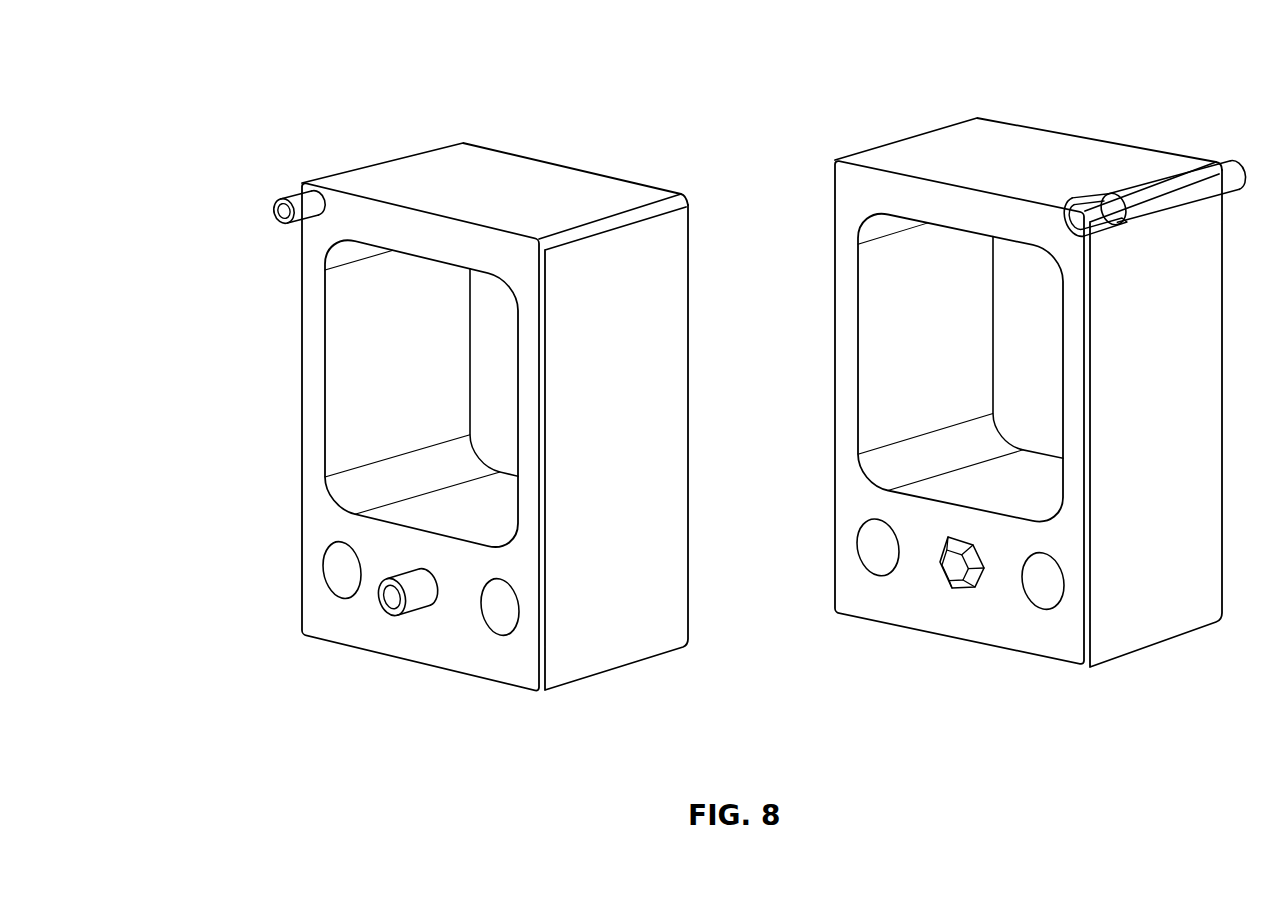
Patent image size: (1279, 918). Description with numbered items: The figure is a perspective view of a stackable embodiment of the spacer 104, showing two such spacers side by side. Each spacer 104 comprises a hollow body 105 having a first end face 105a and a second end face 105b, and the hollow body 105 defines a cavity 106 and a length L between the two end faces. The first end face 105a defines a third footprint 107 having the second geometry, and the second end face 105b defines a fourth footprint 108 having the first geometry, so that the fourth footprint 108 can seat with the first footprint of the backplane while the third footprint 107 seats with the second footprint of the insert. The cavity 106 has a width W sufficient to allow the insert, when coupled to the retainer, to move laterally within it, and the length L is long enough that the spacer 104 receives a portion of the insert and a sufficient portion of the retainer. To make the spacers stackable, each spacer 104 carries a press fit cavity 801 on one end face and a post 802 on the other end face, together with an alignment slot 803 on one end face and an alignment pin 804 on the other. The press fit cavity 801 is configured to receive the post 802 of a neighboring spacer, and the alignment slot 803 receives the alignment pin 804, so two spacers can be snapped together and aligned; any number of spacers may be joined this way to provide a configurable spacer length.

The spacer 104 is at (483, 84).
The hollow body 105 is at (530, 178).
The first end face 105a is at (664, 419).
The third footprint 107 is at (688, 250).
The second end face 105b is at (330, 436).
The fourth footprint 108 is at (317, 513).
The cavity 106 is at (352, 400).
The press fit cavity 801 is at (957, 569).
The post 802 is at (390, 603).
The alignment slot 803 is at (1097, 226).
The alignment pin 804 is at (283, 198).